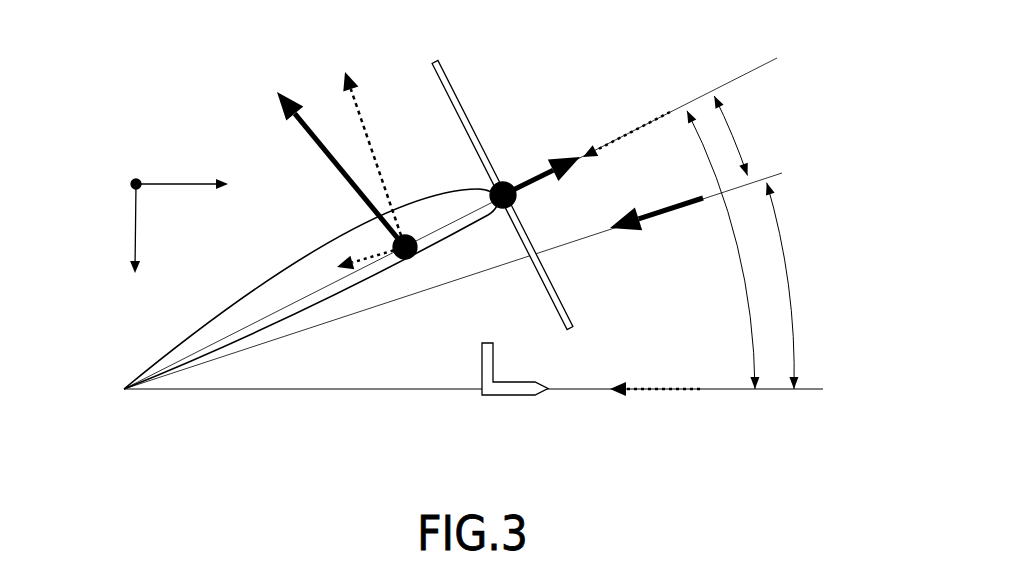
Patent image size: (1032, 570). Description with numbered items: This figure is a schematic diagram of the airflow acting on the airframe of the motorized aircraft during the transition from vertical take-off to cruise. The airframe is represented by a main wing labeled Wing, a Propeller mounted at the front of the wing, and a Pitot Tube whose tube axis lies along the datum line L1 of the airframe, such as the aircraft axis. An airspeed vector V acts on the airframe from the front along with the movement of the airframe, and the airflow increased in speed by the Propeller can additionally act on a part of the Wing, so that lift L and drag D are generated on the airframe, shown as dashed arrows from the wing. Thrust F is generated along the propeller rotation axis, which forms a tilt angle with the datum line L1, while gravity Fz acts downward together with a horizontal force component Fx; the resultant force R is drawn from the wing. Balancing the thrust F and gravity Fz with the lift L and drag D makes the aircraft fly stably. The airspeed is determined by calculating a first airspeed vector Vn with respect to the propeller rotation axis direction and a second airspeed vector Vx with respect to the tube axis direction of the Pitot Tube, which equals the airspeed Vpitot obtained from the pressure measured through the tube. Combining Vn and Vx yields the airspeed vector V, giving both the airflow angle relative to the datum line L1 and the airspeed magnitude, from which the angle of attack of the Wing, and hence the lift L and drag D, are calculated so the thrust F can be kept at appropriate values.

The datum line L1 is at (310, 389).
The main wing Wing is at (311, 314).
The propeller Propeller is at (504, 182).
The pitot tube Pitot Tube is at (521, 390).
The resultant aerodynamic force R is at (324, 153).
The lift L is at (370, 136).
The drag D is at (350, 269).
The thrust F is at (546, 157).
The airspeed vector V is at (656, 228).
The first airspeed vector Vn is at (626, 119).
The second airspeed vector Vx is at (655, 369).
The airspeed with respect to the tube axis direction of the pitot tube Vpitot is at (537, 360).
The horizontal force component Fx is at (197, 187).
The gravity Fz is at (136, 253).